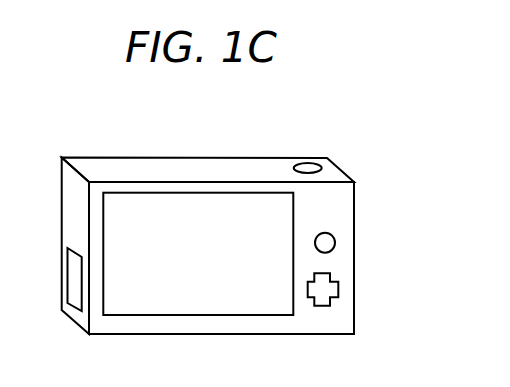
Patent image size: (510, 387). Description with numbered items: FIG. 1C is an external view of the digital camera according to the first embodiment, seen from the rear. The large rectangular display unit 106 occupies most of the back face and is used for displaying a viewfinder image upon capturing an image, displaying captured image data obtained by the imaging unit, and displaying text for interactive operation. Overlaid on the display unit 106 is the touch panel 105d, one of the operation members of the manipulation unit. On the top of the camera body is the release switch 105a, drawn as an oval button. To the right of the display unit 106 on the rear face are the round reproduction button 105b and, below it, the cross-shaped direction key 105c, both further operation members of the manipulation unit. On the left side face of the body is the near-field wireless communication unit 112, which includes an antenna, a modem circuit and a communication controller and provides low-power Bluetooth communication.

The display unit 106 is at (293, 209).
The release switch 105a is at (307, 163).
The reproduction button 105b is at (335, 243).
The direction key 105c is at (338, 289).
The touch panel 105d is at (162, 192).
The near-field wireless communication unit 112 is at (68, 280).